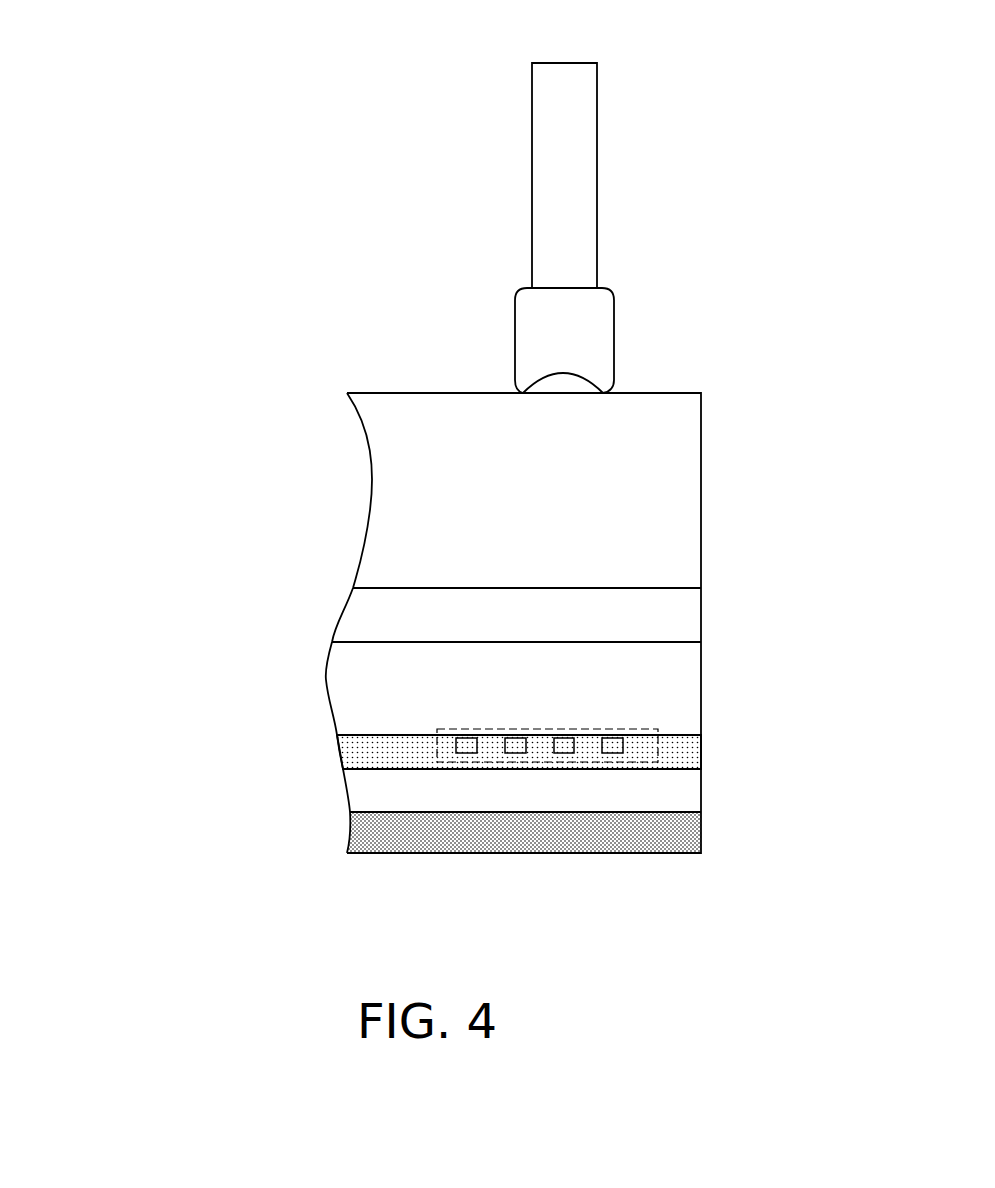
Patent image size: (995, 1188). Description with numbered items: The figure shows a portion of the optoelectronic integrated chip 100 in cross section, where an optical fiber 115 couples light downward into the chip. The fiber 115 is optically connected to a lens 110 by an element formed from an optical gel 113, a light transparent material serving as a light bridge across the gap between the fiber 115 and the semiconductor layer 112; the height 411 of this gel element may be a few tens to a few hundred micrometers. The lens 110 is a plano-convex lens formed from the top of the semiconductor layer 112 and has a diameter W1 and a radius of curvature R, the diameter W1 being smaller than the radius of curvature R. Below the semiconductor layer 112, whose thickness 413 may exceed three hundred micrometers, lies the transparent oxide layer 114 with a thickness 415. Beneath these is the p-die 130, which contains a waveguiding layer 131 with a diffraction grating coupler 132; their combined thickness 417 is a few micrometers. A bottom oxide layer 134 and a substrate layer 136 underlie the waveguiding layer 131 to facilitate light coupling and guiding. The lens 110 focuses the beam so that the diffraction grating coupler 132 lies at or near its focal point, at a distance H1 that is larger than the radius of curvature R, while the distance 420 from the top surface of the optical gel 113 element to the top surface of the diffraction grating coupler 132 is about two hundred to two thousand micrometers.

The optoelectronic integrated chip 100 is at (462, 27).
The lens 110 is at (563, 388).
The semiconductor layer 112 is at (688, 508).
The optical gel 113 is at (597, 318).
The oxide layer 114 is at (688, 606).
The optical fiber 115 is at (548, 178).
The p-die 130 is at (688, 718).
The waveguiding layer 131 is at (407, 750).
The diffraction grating coupler 132 is at (547, 760).
The bottom oxide layer 134 is at (688, 790).
The substrate layer 136 is at (642, 843).
The height 411 is at (409, 289).
The thickness 413 is at (353, 588).
The thickness 415 is at (332, 642).
The thickness 417 is at (343, 769).
The distance 420 is at (515, 288).
The distance H1 is at (347, 393).
The diameter W1 is at (603, 394).
The radius of curvature R is at (532, 380).